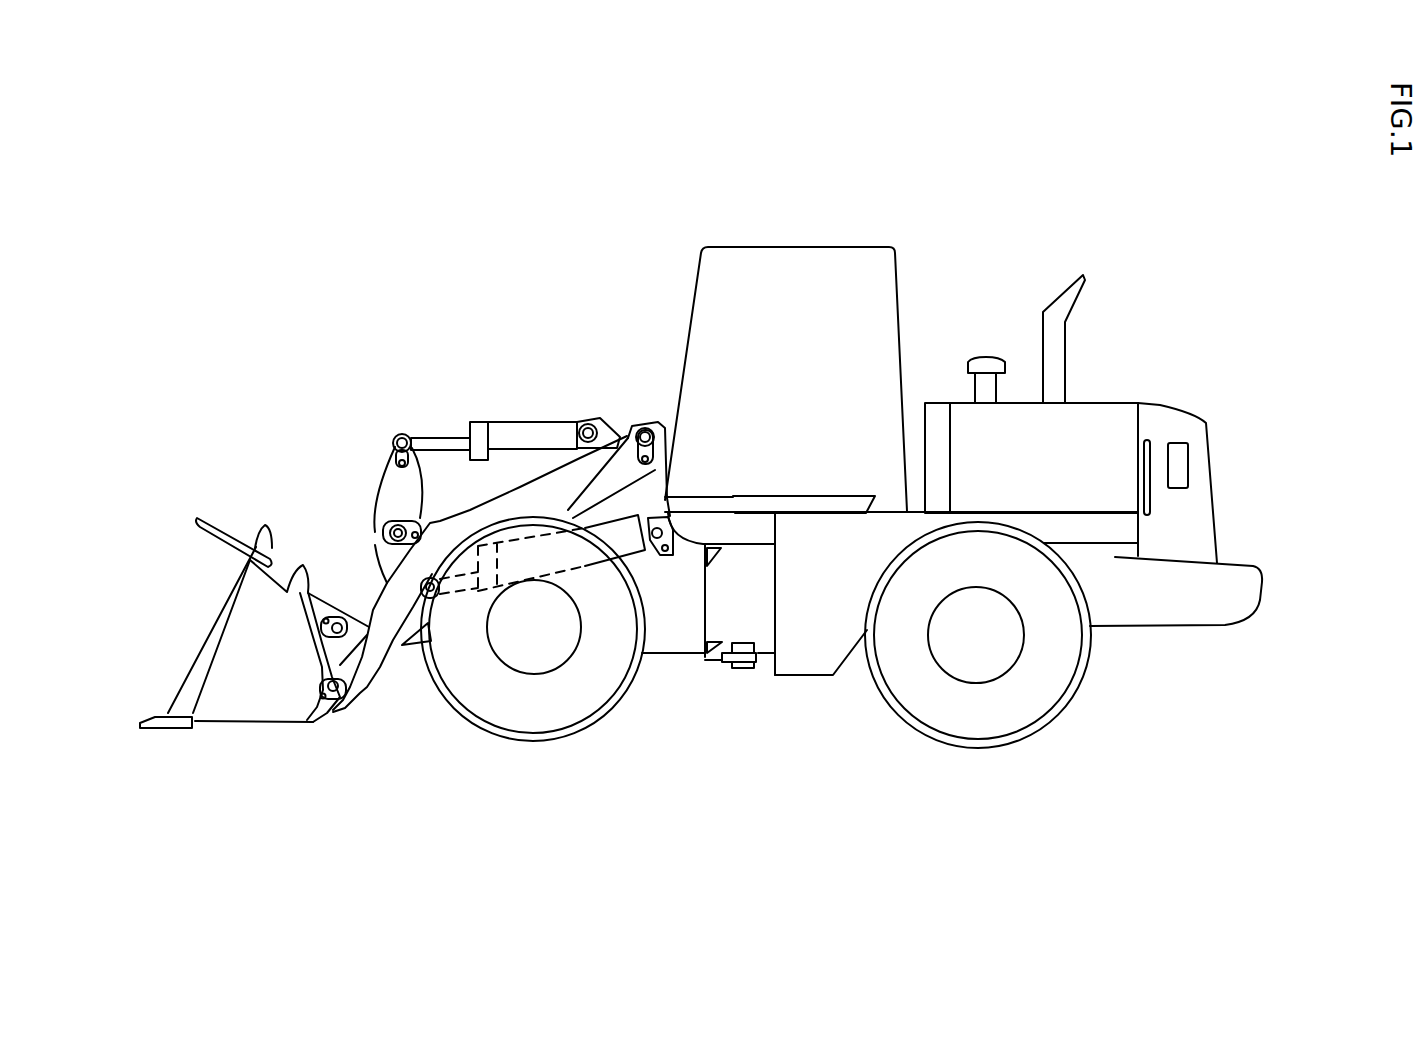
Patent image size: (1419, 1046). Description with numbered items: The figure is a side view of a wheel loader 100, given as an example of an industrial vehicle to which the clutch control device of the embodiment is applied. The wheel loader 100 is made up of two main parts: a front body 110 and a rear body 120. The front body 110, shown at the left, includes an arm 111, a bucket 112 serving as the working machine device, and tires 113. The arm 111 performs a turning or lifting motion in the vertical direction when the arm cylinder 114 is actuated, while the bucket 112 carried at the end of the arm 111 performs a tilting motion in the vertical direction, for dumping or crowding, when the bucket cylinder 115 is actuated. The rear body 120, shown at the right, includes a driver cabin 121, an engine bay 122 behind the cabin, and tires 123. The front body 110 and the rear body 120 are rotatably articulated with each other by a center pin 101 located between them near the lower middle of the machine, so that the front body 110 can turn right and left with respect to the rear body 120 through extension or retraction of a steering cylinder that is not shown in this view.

The wheel loader 100 is at (1158, 650).
The center pin 101 is at (747, 668).
The front body 110 is at (630, 436).
The arm 111 is at (376, 603).
The bucket 112 is at (237, 537).
The tires 113 is at (522, 705).
The arm cylinder 114 is at (483, 590).
The bucket cylinder 115 is at (520, 420).
The rear body 120 is at (1235, 585).
The driver cabin 121 is at (742, 268).
The engine bay 122 is at (1118, 425).
The tires 123 is at (997, 717).